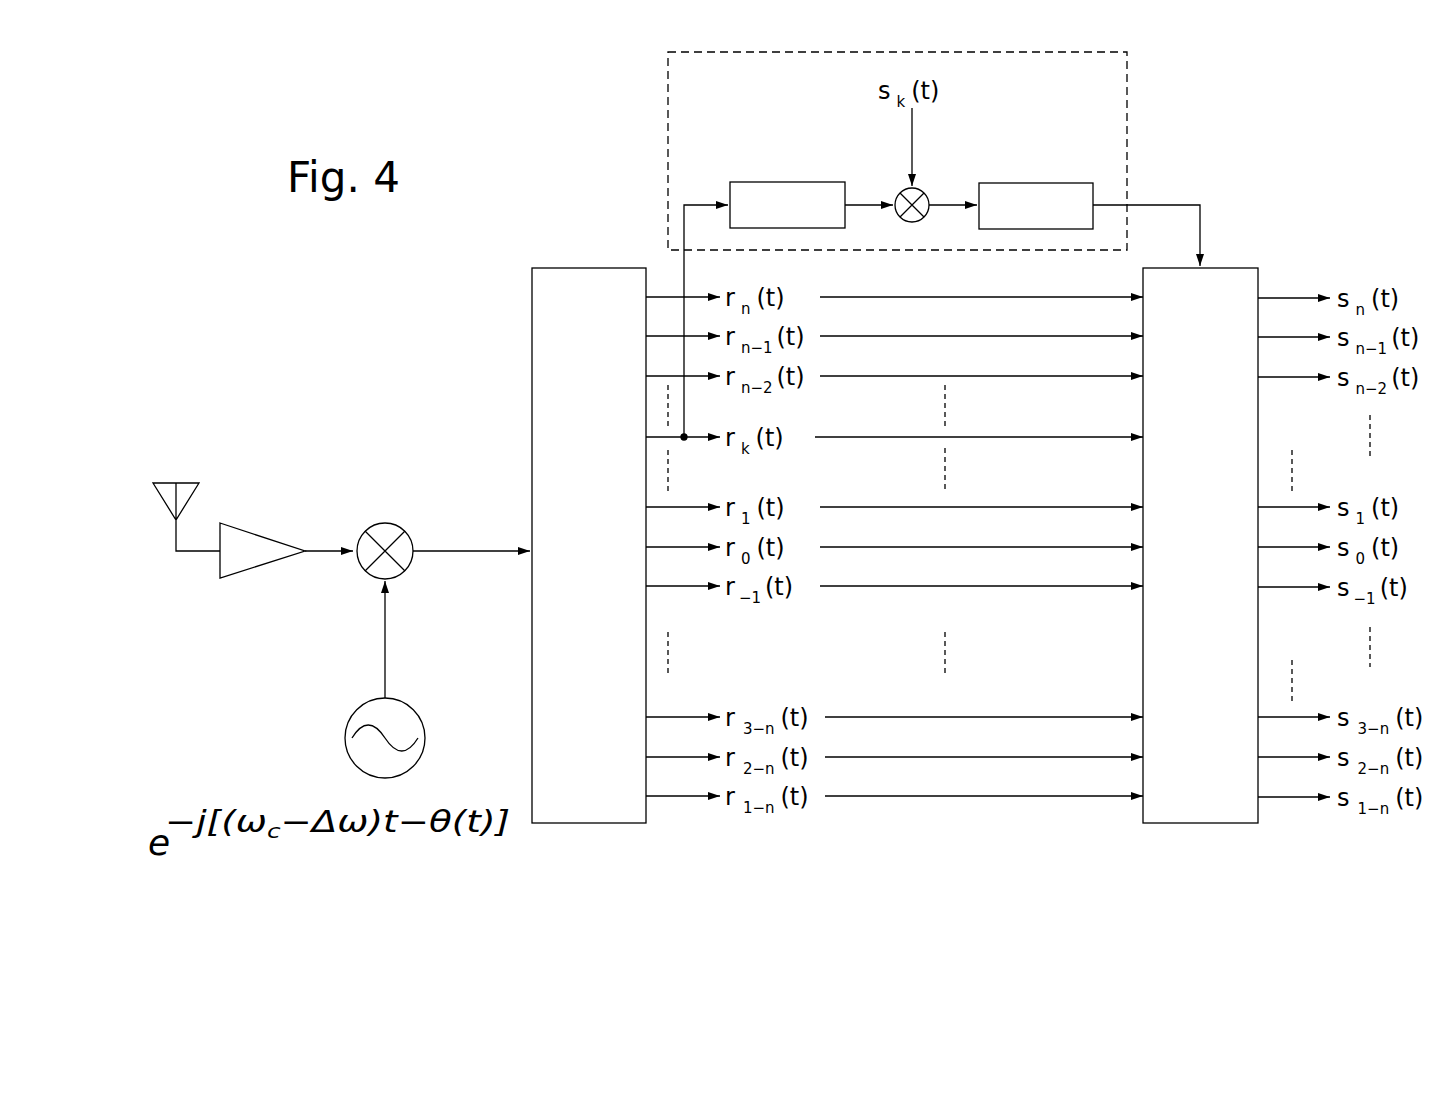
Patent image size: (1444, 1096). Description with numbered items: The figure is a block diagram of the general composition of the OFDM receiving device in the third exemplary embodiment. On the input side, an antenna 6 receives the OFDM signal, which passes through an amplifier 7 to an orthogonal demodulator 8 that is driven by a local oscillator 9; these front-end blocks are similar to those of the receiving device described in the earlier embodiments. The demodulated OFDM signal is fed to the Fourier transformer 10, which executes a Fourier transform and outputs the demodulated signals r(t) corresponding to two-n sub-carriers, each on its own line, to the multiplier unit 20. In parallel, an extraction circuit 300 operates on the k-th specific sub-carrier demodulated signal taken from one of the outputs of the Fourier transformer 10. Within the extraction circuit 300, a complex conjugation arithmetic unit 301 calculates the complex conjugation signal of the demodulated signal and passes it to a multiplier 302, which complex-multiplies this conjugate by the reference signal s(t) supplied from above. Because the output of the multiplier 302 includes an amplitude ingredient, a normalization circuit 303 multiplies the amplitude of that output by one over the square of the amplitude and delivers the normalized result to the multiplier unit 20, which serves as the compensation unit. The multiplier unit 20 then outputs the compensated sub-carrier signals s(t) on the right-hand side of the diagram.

The antenna 6 is at (190, 483).
The amplifier 7 is at (258, 534).
The orthogonal demodulator 8 is at (395, 520).
The local oscillator 9 is at (418, 704).
The Fourier transformer 10 is at (583, 266).
The multiplier unit 20 is at (1225, 266).
The extraction circuit 300 is at (934, 246).
The complex conjugation arithmetic unit 301 is at (790, 182).
The multiplier 302 is at (928, 196).
The normalization circuit 303 is at (1040, 182).